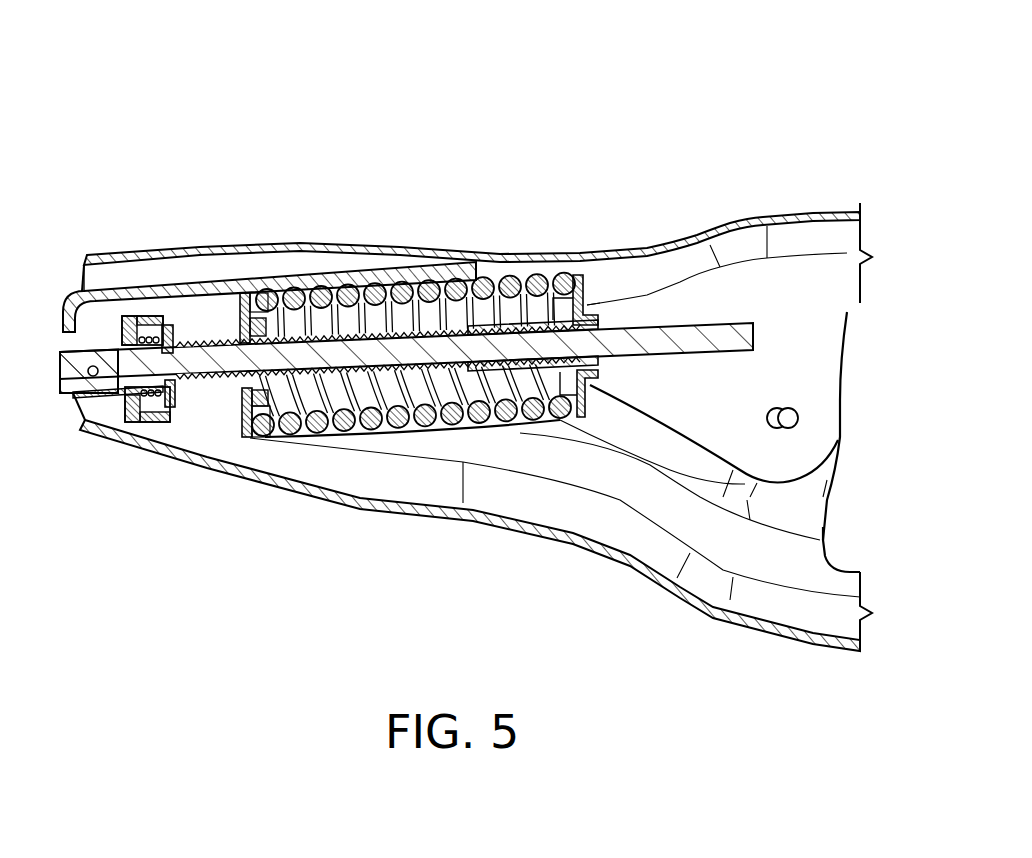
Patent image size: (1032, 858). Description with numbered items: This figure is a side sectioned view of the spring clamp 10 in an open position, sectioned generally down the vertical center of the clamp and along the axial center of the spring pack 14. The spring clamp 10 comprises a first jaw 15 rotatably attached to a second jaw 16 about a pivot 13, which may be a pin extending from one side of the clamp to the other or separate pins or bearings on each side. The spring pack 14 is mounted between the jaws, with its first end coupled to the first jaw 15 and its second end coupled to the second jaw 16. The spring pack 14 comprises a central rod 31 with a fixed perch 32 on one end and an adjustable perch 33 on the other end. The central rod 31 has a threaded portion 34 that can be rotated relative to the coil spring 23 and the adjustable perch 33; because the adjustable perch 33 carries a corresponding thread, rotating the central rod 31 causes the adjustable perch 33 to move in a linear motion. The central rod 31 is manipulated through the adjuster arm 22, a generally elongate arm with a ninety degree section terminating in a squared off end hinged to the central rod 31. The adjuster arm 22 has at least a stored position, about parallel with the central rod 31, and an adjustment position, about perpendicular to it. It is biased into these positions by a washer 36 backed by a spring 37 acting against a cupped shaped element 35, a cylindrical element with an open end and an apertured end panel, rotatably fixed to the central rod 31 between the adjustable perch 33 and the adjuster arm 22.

The spring clamp 10 is at (185, 103).
The pivot 13 is at (799, 413).
The spring pack 14 is at (606, 308).
The first jaw 15 is at (848, 313).
The second jaw 16 is at (824, 526).
The adjuster arm 22 is at (352, 270).
The coil spring 23 is at (430, 298).
The central rod 31 is at (675, 316).
The fixed perch 32 is at (595, 389).
The adjustable perch 33 is at (238, 428).
The threaded portion 34 is at (208, 334).
The cupped shaped element 35 is at (146, 316).
The washer 36 is at (114, 337).
The spring 37 is at (143, 395).